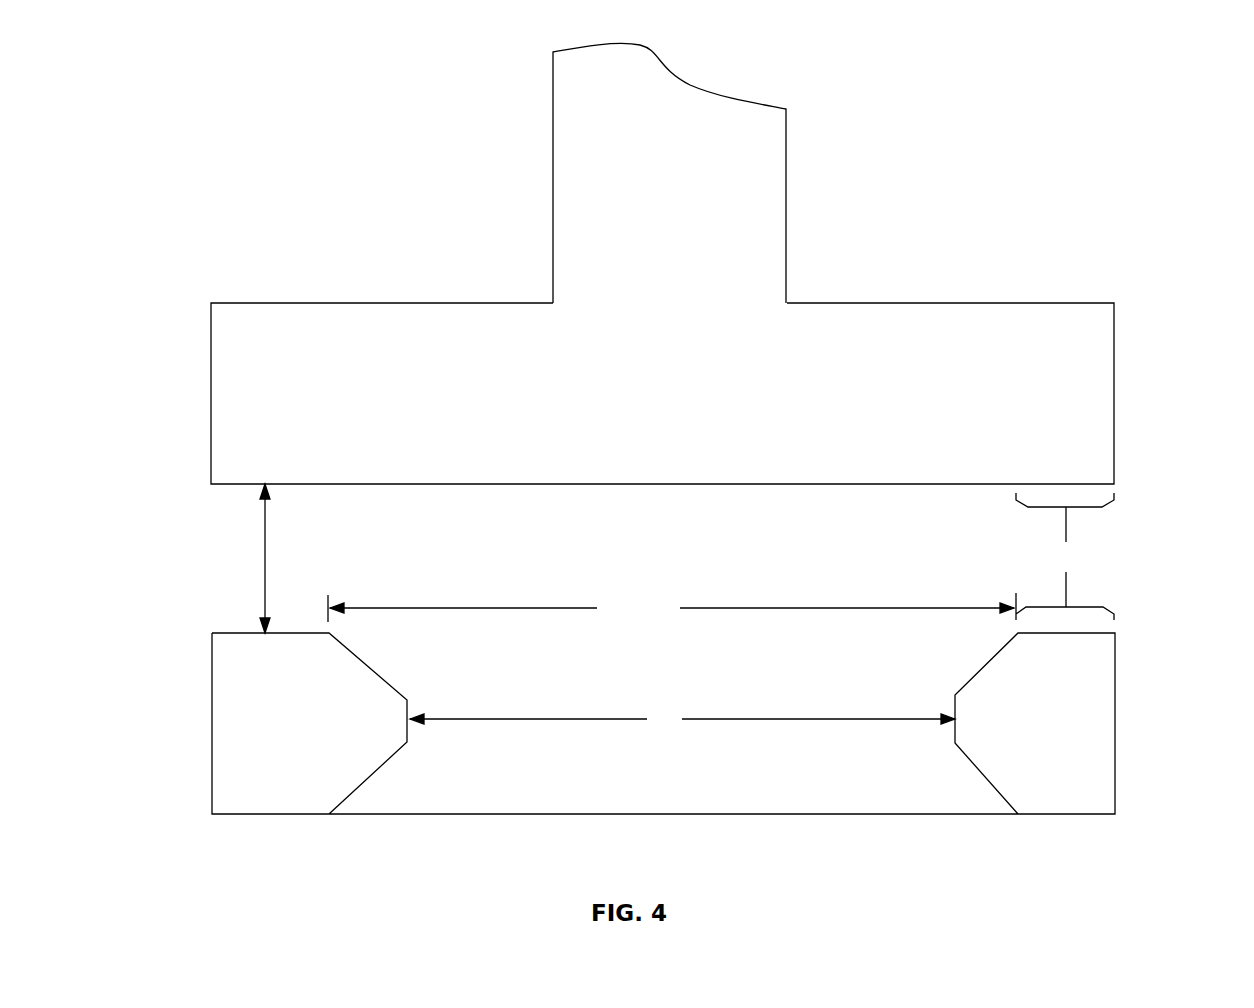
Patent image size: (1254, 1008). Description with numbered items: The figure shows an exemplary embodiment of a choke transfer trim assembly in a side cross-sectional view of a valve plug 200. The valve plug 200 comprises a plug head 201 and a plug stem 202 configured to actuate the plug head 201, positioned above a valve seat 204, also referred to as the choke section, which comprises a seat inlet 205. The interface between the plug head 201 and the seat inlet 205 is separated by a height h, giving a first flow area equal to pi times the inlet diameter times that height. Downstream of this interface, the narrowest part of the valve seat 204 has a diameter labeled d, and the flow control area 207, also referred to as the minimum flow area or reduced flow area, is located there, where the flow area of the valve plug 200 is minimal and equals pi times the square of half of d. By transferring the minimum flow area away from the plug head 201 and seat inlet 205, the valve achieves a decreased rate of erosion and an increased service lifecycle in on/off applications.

The valve plug 200 is at (264, 70).
The plug head 201 is at (1077, 423).
The plug stem 202 is at (768, 170).
The valve seat 204 is at (249, 802).
The seat inlet 205 is at (1079, 633).
The flow control area 207 is at (675, 710).